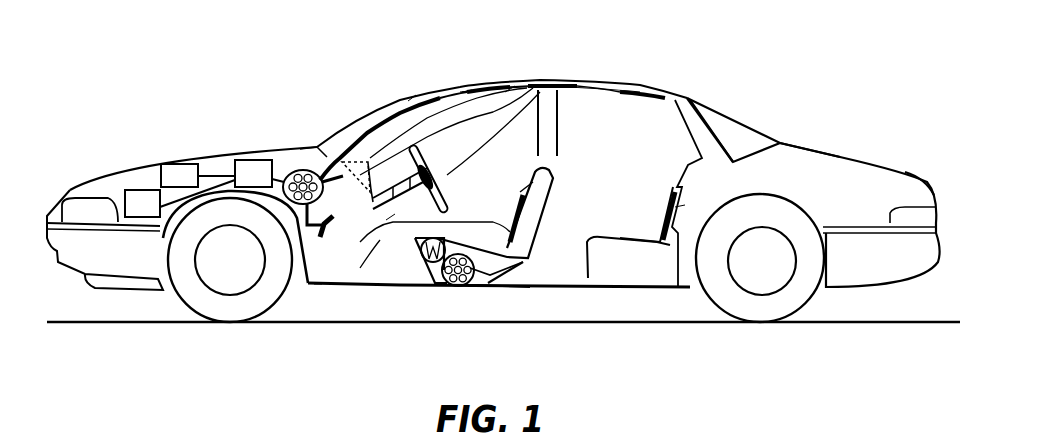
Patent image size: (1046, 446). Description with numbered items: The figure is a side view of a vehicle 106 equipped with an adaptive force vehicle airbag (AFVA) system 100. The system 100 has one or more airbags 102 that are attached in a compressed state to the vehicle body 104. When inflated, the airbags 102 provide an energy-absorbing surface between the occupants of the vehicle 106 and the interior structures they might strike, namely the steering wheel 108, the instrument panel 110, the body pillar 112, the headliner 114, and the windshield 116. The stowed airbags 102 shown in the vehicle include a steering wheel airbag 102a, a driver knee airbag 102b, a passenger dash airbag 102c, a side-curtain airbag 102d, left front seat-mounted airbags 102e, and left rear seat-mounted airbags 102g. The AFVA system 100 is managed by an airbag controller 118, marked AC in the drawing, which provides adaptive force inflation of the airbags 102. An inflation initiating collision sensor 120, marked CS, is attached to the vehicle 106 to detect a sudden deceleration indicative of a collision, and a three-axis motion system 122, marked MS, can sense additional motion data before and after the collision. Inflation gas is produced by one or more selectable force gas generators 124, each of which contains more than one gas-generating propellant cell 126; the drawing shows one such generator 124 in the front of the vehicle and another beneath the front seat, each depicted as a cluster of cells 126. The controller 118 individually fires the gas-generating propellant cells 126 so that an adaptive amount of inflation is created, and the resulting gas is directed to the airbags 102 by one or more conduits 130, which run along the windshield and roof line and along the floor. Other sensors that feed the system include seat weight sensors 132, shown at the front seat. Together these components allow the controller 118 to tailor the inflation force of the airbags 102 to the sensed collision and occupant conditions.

The adaptive force vehicle airbag (AFVA) system 100 is at (222, 150).
The airbag 102 is at (590, 157).
The steering wheel airbag 102a is at (513, 87).
The driver knee airbag 102b is at (318, 285).
The passenger dash airbag 102c is at (412, 98).
The side-curtain airbag 102d is at (467, 83).
The left front seat-mounted airbags 102e is at (390, 218).
The left rear seat-mounted airbags 102g is at (677, 205).
The vehicle body 104 is at (803, 145).
The vehicle 106 is at (893, 160).
The steering wheel 108 is at (323, 242).
The instrument panel 110 is at (508, 80).
The body pillar 112 is at (560, 133).
The headliner 114 is at (690, 107).
The windshield 116 is at (317, 147).
The airbag controller 118 is at (249, 160).
The inflation initiating collision sensor 120 is at (156, 189).
The three-axis motion system 122 is at (172, 162).
The selectable force gas generator 124 is at (303, 170).
The gas-generating propellant cells 126 is at (283, 170).
The conduit 130 is at (352, 128).
The seat weight sensors 132 is at (420, 262).